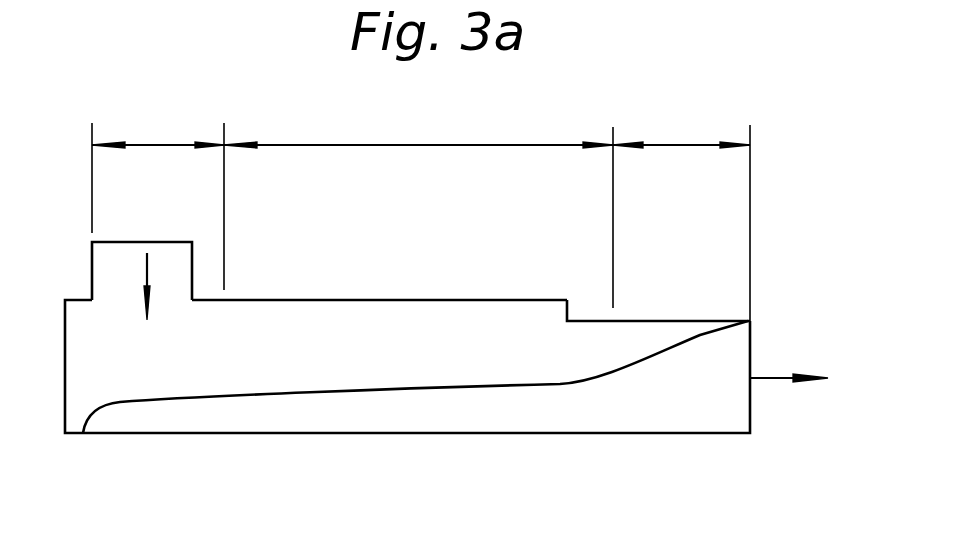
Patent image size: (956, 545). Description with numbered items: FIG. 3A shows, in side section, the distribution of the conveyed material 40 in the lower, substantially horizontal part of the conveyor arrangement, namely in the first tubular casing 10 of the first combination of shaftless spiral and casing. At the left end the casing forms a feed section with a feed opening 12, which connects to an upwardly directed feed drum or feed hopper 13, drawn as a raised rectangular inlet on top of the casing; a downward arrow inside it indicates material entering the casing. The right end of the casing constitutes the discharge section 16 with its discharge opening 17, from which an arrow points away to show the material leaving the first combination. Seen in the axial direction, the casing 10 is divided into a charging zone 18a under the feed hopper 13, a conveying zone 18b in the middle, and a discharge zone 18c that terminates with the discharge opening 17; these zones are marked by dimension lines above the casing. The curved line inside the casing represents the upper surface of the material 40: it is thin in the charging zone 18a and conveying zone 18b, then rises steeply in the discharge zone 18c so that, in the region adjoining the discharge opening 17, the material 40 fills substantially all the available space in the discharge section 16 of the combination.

The first tubular casing 10 is at (286, 282).
The feed opening 12 is at (113, 303).
The feed hopper 13 is at (93, 253).
The discharge section 16 is at (663, 300).
The discharge opening 17 is at (764, 328).
The material 40 is at (377, 420).
The charging zone 18a is at (158, 198).
The conveying zone 18b is at (418, 208).
The discharge zone 18c is at (681, 214).